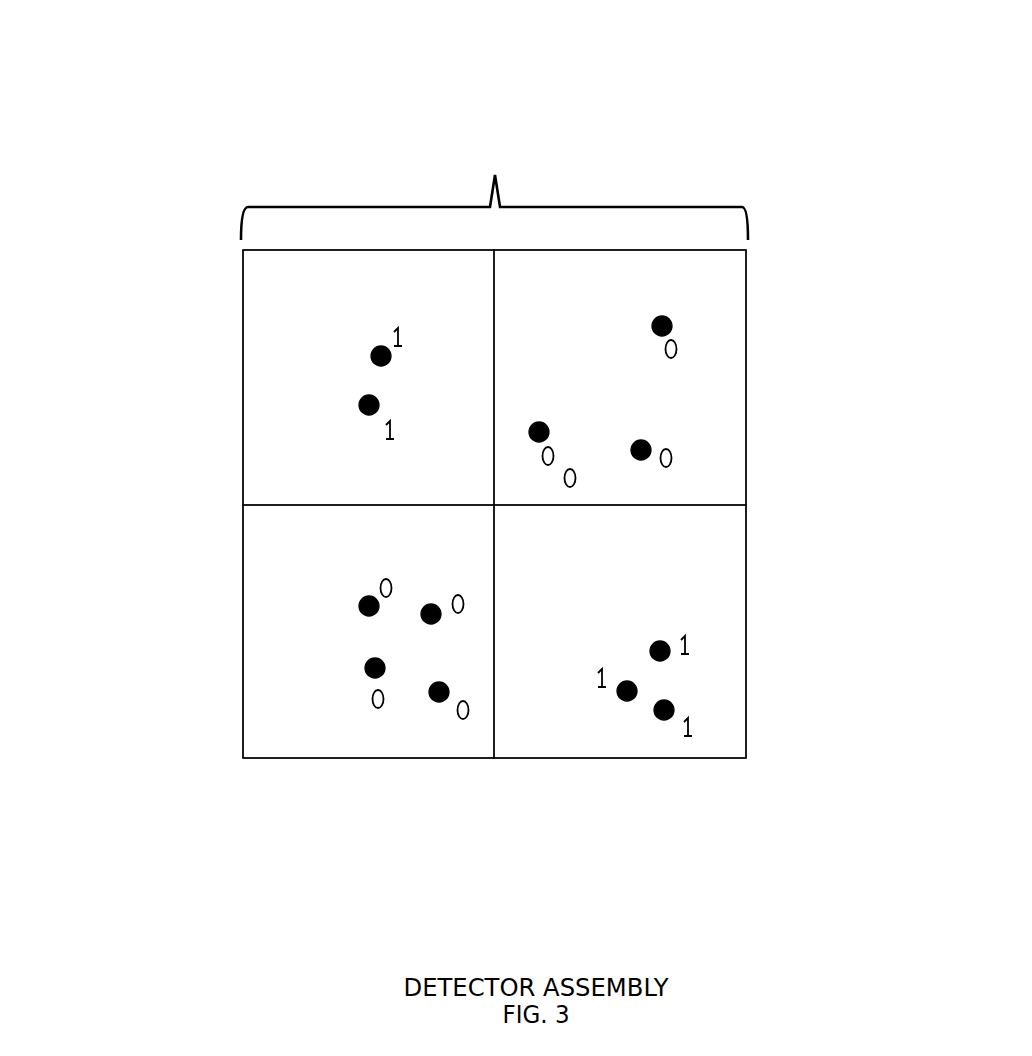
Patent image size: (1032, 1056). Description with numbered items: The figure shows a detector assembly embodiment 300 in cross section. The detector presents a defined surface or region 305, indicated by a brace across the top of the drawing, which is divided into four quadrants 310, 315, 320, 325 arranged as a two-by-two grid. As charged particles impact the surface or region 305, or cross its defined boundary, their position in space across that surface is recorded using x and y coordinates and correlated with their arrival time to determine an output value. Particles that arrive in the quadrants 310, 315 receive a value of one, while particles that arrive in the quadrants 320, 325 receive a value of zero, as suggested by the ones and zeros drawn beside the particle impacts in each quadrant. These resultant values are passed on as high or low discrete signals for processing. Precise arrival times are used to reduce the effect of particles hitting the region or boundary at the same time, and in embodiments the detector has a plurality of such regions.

The detector assembly embodiment 300 is at (19, 53).
The surface or region 305 is at (494, 170).
The quadrant 310 is at (231, 362).
The quadrant 315 is at (760, 653).
The quadrant 320 is at (231, 650).
The quadrant 325 is at (759, 350).